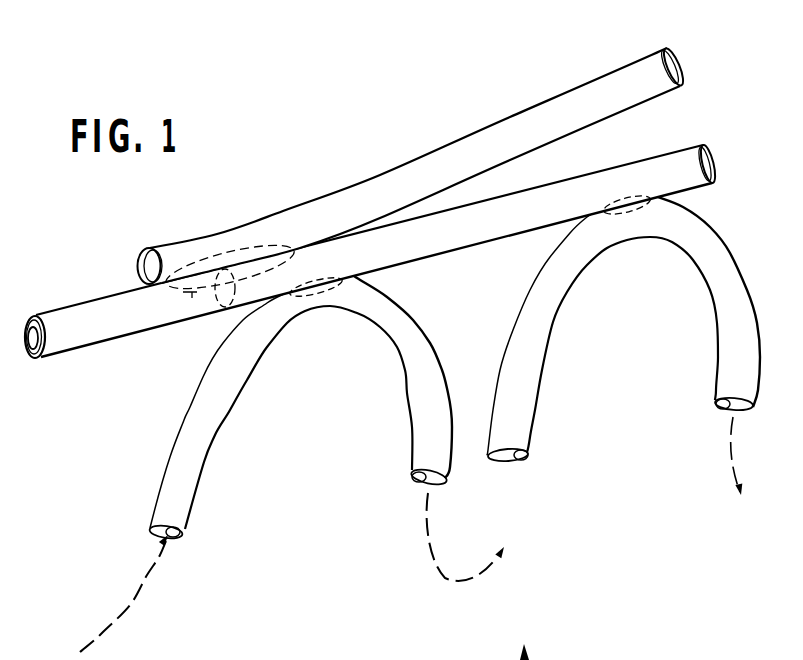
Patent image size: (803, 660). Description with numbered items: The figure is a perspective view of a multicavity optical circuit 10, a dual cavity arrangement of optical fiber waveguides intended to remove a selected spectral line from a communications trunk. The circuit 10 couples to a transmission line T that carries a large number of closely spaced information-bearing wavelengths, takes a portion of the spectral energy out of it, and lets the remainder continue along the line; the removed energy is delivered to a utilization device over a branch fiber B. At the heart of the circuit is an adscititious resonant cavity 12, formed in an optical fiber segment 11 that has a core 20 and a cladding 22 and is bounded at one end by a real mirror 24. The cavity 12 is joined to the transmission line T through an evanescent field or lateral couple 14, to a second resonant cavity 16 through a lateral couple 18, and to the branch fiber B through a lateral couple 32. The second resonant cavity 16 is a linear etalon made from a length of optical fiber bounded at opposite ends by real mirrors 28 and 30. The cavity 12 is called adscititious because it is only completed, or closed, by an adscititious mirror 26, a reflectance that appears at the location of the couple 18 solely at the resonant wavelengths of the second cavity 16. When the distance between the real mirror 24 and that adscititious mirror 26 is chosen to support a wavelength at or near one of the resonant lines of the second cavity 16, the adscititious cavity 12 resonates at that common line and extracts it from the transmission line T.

The multicavity optical circuit 10 is at (425, 151).
The optical waveguide or fiber segment 11 is at (387, 252).
The adscititious resonant cavity 12 is at (520, 188).
The lateral couple 14 is at (332, 297).
The second resonant cavity 16 is at (605, 128).
The lateral couple 18 is at (190, 292).
The core 20 is at (29, 327).
The cladding 22 is at (55, 364).
The real mirror 24 is at (713, 148).
The adscititious mirror 26 is at (233, 305).
The real mirror 28 is at (149, 248).
The real mirror 30 is at (685, 63).
The lateral couple 32 is at (633, 225).
The transmission line T is at (175, 462).
The branch fiber B is at (717, 348).